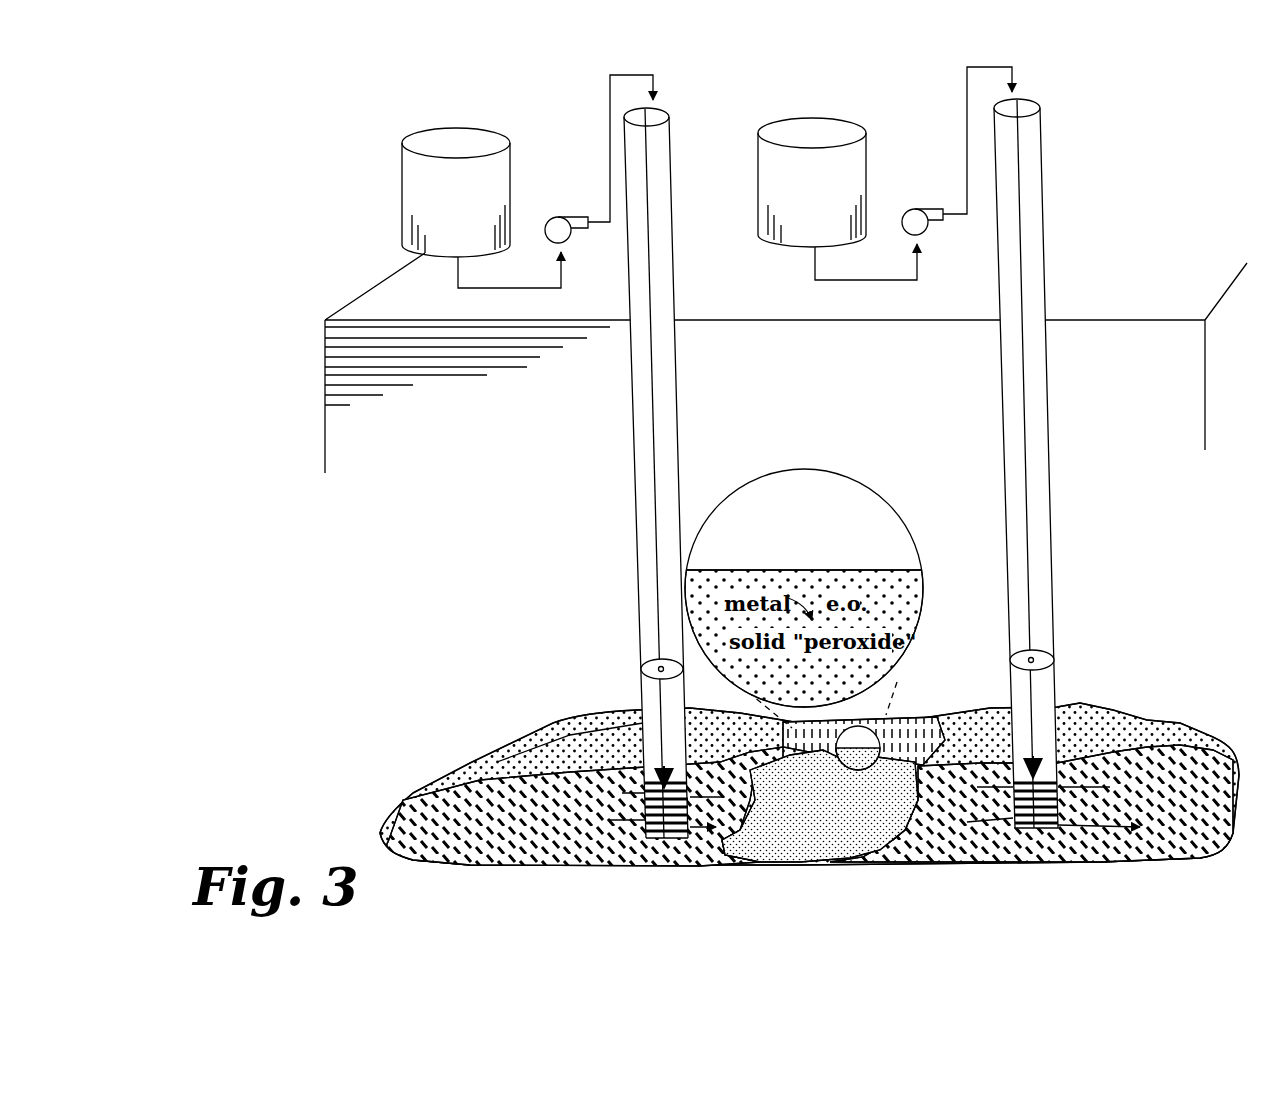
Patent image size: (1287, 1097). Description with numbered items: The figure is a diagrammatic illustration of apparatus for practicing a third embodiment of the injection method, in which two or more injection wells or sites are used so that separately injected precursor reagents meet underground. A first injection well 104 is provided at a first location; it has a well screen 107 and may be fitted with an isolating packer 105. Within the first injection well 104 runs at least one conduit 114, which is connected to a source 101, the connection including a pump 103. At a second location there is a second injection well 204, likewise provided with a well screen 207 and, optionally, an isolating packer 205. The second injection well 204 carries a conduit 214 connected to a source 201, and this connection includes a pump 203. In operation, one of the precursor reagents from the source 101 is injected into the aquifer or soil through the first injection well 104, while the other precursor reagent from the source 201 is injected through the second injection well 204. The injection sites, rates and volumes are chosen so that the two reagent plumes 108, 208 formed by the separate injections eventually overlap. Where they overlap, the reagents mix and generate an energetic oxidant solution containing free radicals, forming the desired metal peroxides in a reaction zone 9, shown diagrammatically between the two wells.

The reaction zone 9 is at (813, 848).
The source 101 is at (458, 142).
The pump 103 is at (558, 217).
The first injection well 104 is at (633, 470).
The isolating packer 105 is at (641, 670).
The well screen 107 is at (682, 848).
The reagent plume 108 is at (600, 858).
The conduit 114 is at (655, 409).
The source 201 is at (818, 135).
The pump 203 is at (915, 209).
The second injection well 204 is at (1027, 513).
The isolating packer 205 is at (1054, 658).
The well screen 207 is at (1038, 836).
The reagent plume 208 is at (1150, 857).
The conduit 214 is at (1023, 412).